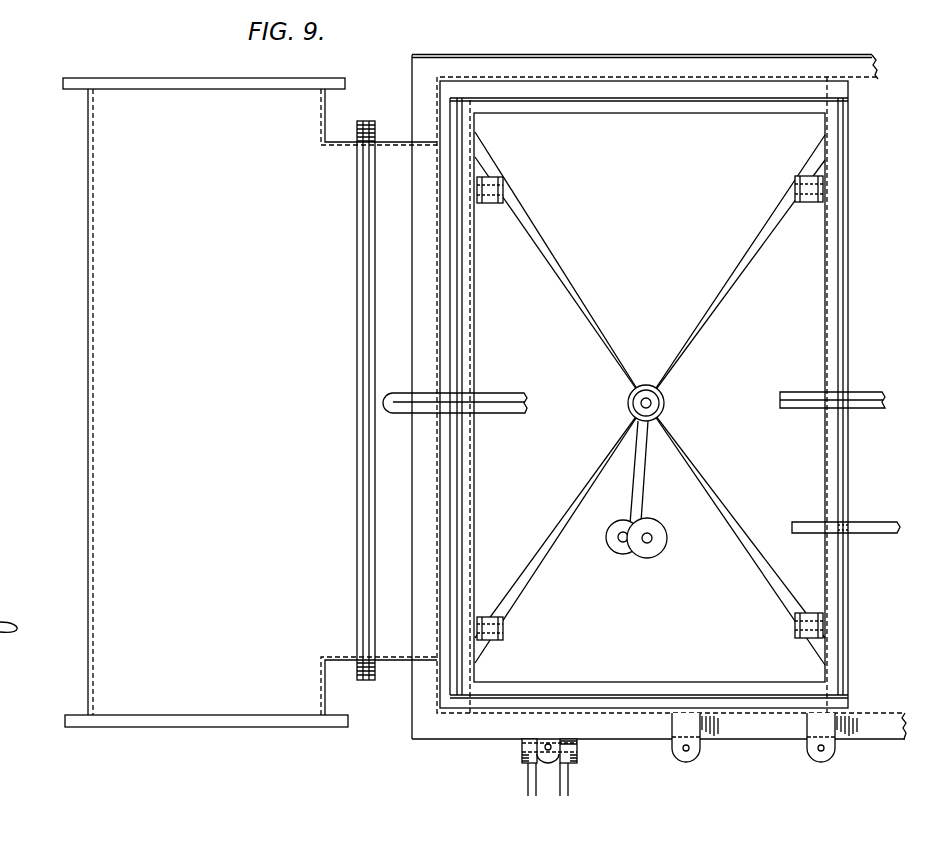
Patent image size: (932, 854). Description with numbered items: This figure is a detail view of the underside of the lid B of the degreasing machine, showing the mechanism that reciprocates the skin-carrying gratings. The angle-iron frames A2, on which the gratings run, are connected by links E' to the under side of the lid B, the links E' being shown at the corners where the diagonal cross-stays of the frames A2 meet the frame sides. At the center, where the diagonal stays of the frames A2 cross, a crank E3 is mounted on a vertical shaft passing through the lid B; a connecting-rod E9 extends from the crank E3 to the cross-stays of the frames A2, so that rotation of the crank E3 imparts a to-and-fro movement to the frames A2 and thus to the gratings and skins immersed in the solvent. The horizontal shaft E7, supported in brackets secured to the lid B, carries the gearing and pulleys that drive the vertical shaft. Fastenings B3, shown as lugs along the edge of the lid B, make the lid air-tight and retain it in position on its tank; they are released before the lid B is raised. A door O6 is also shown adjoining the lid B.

The frame A2 is at (571, 108).
The link E' is at (650, 420).
The lid B is at (659, 397).
The fastening B3 is at (398, 390).
The connecting-rod E9 is at (636, 487).
The crank E3 is at (667, 541).
The horizontal shaft E7 is at (885, 534).
The door O6 is at (250, 402).